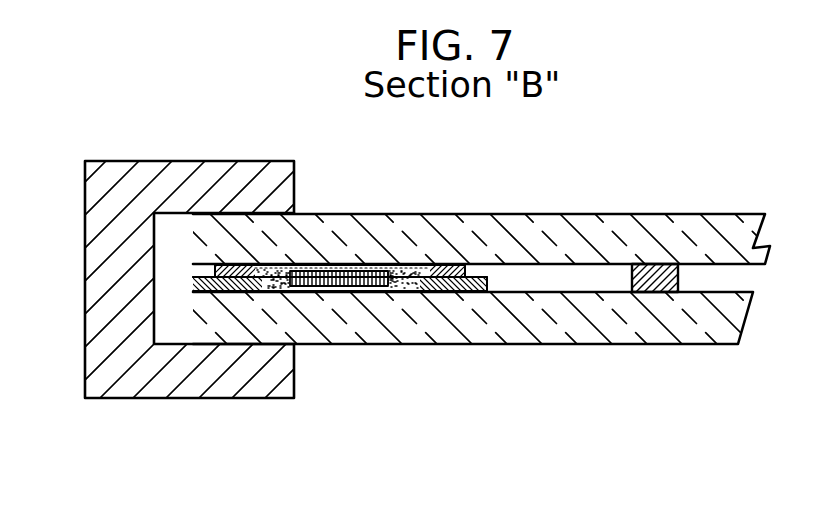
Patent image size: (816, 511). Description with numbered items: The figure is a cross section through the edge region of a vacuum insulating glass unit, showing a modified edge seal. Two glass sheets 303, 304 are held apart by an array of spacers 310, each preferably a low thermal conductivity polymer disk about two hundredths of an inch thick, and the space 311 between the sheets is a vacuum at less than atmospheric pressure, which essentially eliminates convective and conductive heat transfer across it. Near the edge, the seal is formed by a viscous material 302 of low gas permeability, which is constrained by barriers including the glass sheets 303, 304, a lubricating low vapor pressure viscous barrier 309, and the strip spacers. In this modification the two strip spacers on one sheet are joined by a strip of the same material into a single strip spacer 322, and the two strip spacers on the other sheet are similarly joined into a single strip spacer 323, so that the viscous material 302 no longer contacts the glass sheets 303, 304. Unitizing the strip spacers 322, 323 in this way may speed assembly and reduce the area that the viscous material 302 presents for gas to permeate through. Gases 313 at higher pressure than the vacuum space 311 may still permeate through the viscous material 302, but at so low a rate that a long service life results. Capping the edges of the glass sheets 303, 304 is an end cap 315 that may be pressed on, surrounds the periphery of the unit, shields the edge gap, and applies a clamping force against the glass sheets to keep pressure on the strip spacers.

The viscous material 302 is at (354, 275).
The glass sheet 303 is at (638, 345).
The glass sheet 304 is at (633, 214).
The lubricating low vapor pressure viscous barrier 309 is at (393, 292).
The spacer 310 is at (630, 278).
The vacuum space 311 is at (532, 273).
The gases 313 is at (65, 265).
The end cap 315 is at (128, 161).
The strip spacer 322 is at (432, 293).
The strip spacer 323 is at (443, 267).